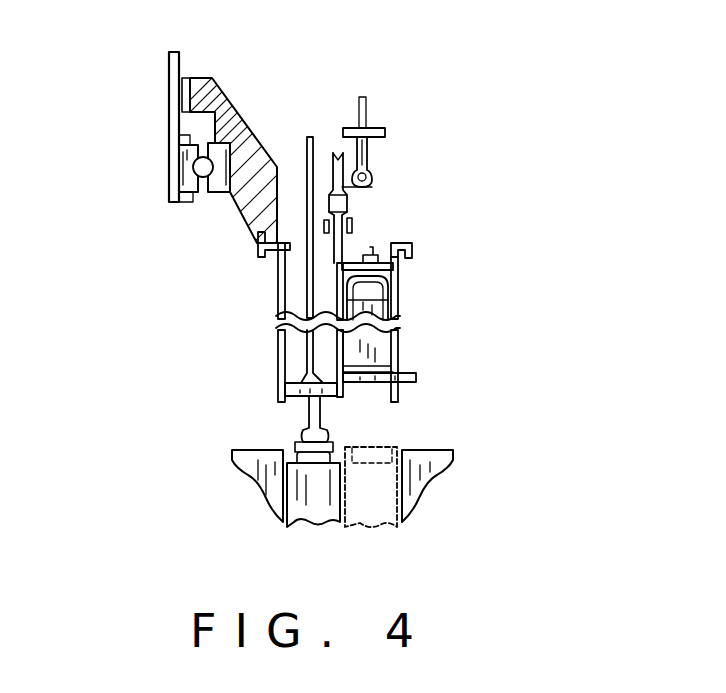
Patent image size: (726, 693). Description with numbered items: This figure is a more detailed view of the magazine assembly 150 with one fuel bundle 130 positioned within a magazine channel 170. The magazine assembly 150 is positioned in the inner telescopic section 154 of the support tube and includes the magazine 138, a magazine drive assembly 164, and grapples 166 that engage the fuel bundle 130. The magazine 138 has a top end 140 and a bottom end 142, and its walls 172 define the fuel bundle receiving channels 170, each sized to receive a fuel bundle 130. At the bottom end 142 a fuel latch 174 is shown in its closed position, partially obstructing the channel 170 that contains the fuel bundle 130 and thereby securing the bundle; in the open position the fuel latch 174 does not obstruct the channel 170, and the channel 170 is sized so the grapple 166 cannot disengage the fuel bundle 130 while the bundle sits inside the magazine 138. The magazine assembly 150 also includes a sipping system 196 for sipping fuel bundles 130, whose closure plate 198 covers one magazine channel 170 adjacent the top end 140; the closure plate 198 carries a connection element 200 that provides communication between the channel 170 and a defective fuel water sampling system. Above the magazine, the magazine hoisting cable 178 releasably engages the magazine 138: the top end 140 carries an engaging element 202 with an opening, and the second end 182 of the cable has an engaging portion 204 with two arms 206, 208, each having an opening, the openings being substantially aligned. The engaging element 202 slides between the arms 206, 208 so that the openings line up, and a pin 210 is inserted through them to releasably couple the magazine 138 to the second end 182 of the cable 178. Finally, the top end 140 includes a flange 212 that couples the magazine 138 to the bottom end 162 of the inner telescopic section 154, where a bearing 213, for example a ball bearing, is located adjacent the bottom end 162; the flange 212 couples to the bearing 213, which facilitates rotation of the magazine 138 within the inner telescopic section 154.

The fuel bundle 130 is at (273, 480).
The magazine 138 is at (376, 307).
The top end 140 is at (246, 215).
The bottom end 142 is at (399, 398).
The magazine assembly 150 is at (468, 136).
The inner telescopic section 154 is at (166, 70).
The bottom end 162 is at (162, 165).
The magazine drive assembly 164 is at (329, 126).
The grapple 166 is at (306, 165).
The fuel bundle receiving channel 170 is at (399, 273).
The wall 172 is at (399, 282).
The fuel latch 174 is at (417, 378).
The magazine hoisting cable 178 is at (337, 152).
The second end 182 is at (372, 187).
The sipping system 196 is at (380, 240).
The closure plate 198 is at (300, 277).
The connection element 200 is at (380, 248).
The engaging element 202 is at (352, 218).
The engaging portion 204 is at (332, 187).
The arm 206 is at (270, 236).
The arm 208 is at (286, 258).
The pin 210 is at (257, 243).
The flange 212 is at (212, 80).
The bearing 213 is at (185, 174).